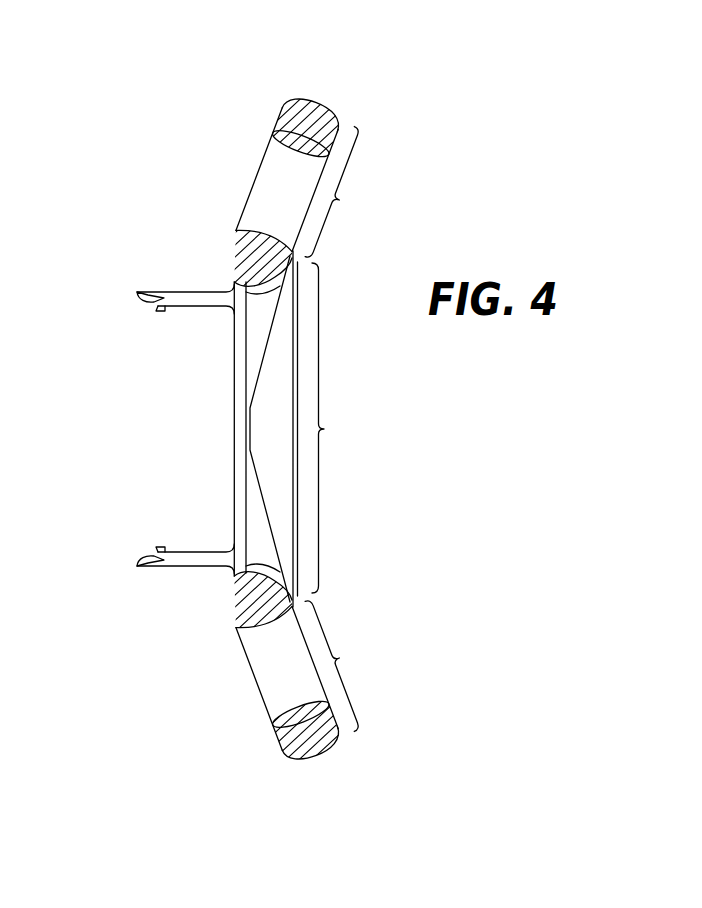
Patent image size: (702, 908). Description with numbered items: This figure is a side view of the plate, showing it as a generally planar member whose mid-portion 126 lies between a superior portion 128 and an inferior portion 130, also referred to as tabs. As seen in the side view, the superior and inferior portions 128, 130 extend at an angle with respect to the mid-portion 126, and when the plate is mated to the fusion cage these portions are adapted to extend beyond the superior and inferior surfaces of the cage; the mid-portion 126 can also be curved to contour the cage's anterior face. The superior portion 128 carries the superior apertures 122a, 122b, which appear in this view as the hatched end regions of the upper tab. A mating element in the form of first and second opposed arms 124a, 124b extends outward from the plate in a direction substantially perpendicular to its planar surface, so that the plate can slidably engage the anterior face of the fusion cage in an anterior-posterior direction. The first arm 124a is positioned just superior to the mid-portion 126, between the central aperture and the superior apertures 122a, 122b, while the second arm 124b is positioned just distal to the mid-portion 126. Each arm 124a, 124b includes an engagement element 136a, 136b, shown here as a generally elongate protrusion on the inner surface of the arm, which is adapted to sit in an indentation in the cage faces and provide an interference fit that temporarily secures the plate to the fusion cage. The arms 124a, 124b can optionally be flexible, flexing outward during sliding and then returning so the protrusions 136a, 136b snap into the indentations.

The superior aperture 122a is at (288, 738).
The superior aperture 122b is at (288, 122).
The first arm 124a is at (190, 298).
The second arm 124b is at (190, 558).
The mid-portion 126 is at (261, 426).
The superior portion 128 is at (311, 180).
The inferior portion 130 is at (311, 677).
The engagement element 136a is at (157, 321).
The engagement element 136b is at (157, 537).